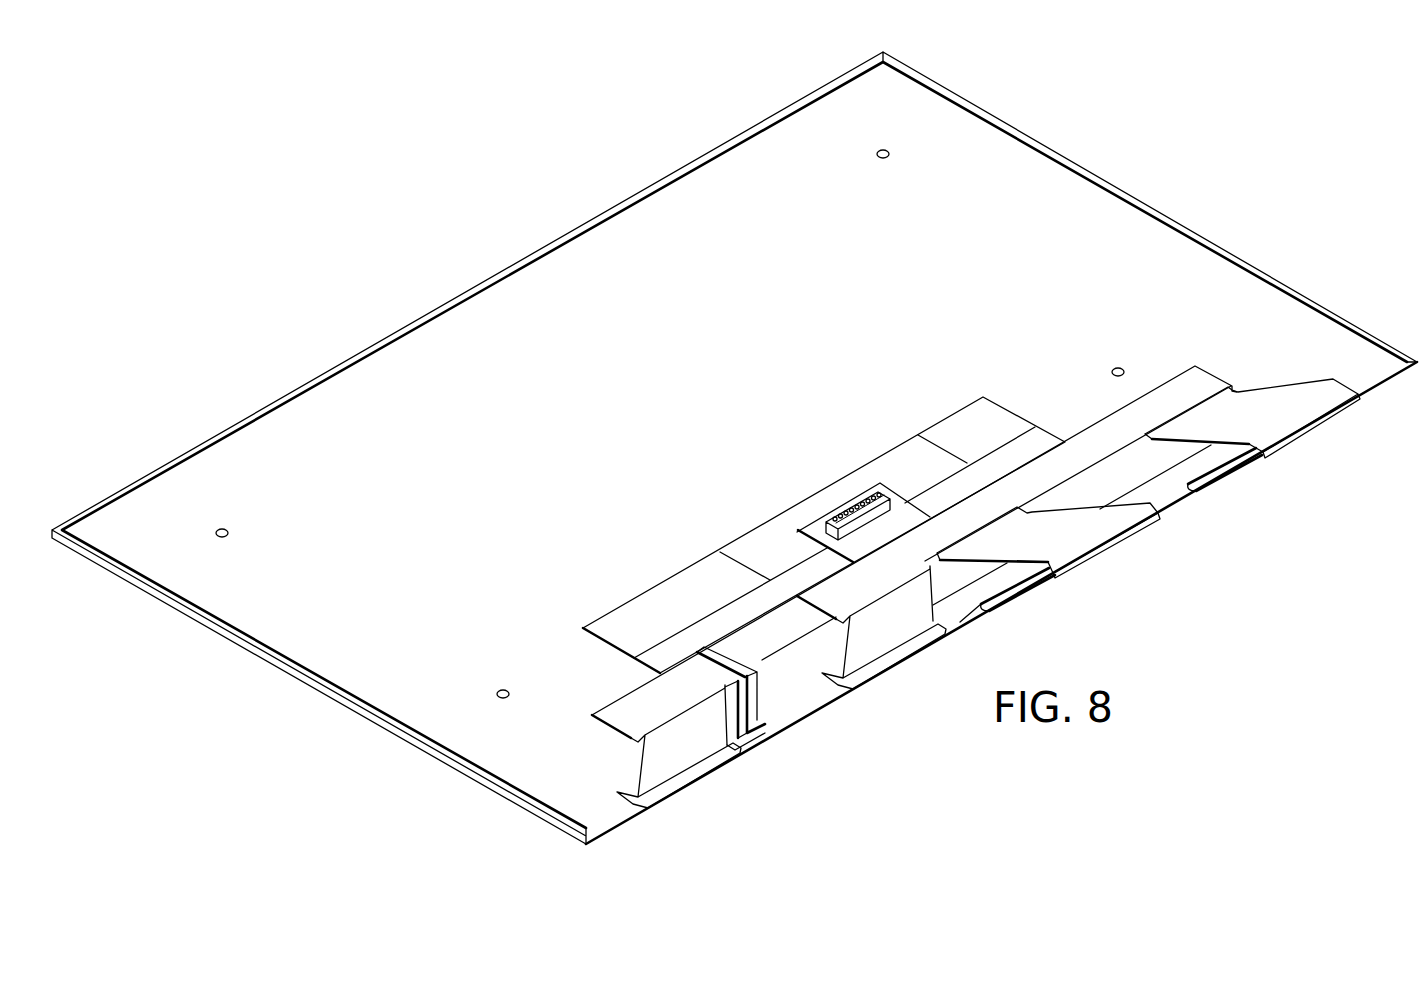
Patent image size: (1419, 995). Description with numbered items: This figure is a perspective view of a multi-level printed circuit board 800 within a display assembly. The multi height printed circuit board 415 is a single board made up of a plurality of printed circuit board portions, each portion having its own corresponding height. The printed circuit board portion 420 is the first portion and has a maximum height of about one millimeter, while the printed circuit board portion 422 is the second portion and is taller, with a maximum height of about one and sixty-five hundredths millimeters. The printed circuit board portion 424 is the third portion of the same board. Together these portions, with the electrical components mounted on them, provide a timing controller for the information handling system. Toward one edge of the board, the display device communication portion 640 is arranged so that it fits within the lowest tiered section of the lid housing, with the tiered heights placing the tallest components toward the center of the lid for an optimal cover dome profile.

The multi-level printed circuit board 800 is at (463, 225).
The printed circuit board 415 is at (824, 538).
The printed circuit board portion 422 is at (995, 399).
The printed circuit board portion 424 is at (1057, 432).
The printed circuit board portion 420 is at (1170, 382).
The display device communication portion 640 is at (1313, 435).